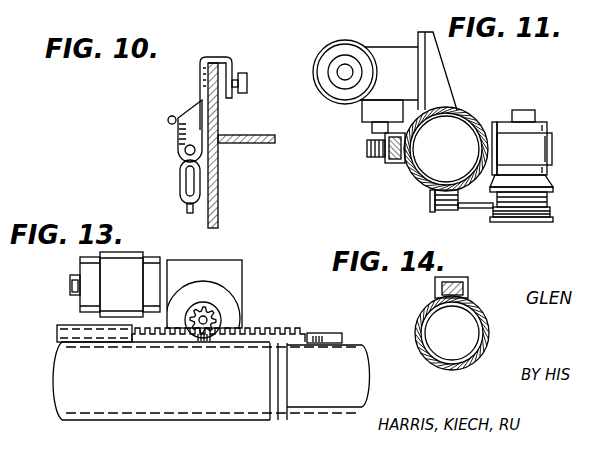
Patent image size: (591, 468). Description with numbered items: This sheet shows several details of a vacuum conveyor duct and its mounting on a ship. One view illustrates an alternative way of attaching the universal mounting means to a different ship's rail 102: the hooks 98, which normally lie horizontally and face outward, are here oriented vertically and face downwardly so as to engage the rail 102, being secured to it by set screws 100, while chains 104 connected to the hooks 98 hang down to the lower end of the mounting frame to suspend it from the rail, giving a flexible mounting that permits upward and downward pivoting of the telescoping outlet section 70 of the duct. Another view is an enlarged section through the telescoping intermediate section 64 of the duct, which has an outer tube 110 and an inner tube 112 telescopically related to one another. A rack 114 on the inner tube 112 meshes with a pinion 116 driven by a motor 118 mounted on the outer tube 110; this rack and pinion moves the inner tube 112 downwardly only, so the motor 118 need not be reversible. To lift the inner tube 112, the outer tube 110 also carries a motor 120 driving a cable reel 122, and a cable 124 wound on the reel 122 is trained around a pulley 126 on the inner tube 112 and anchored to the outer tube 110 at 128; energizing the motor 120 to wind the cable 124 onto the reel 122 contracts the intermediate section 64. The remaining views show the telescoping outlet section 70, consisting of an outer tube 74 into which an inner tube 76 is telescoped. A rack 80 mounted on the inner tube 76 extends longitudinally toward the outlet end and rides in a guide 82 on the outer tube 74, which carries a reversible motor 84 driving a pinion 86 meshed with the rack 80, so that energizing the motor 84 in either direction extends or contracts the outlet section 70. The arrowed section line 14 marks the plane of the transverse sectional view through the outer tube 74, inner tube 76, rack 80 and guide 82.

In FIG. 13, the sectional view line 14 is at (72, 440).
In FIG. 11, the telescoping intermediate section 64 is at (482, 110).
In FIG. 13, the telescoping outlet section 70 is at (288, 320).
In FIG. 13, the outer tube 74 is at (80, 370).
In FIG. 14, the outer tube 74 is at (418, 323).
In FIG. 13, the inner tube 76 is at (347, 373).
In FIG. 14, the inner tube 76 is at (487, 331).
In FIG. 13, the rack 80 is at (245, 331).
In FIG. 14, the rack 80 is at (467, 290).
In FIG. 13, the guide 82 is at (57, 337).
In FIG. 14, the guide 82 is at (466, 277).
In FIG. 13, the reversible motor 84 is at (153, 258).
In FIG. 13, the pinion 86 is at (220, 310).
In FIG. 10, the hooks 98 is at (230, 60).
In FIG. 10, the set screws 100 is at (264, 81).
In FIG. 10, the ship's rail 102 is at (218, 112).
In FIG. 10, the chains 104 is at (178, 185).
In FIG. 11, the outer tube 110 is at (458, 110).
In FIG. 11, the inner tube 112 is at (430, 108).
In FIG. 11, the rack 114 is at (393, 165).
In FIG. 11, the pinion 116 is at (367, 146).
In FIG. 11, the motor 118 is at (341, 99).
In FIG. 11, the motor 120 is at (551, 142).
In FIG. 11, the cable reel 122 is at (518, 222).
In FIG. 11, the cable 124 is at (479, 209).
In FIG. 11, the pulley 126 is at (446, 211).
In FIG. 11, the cable anchor 128 is at (428, 200).